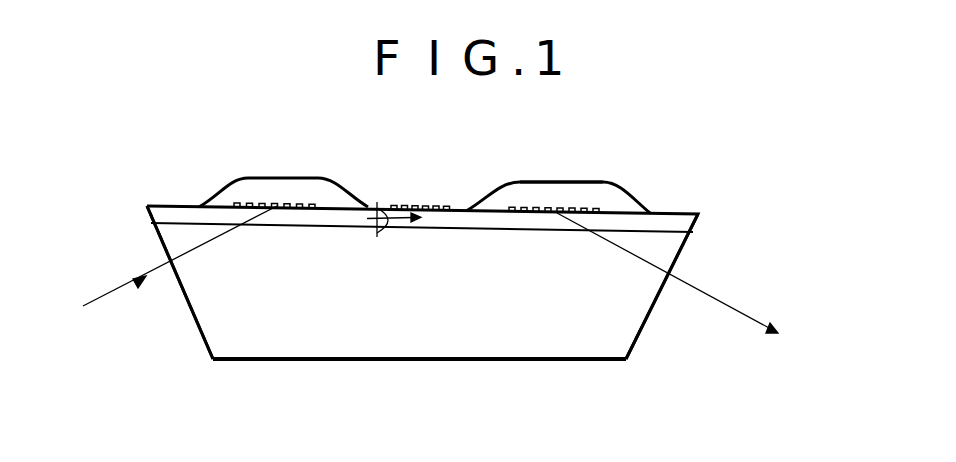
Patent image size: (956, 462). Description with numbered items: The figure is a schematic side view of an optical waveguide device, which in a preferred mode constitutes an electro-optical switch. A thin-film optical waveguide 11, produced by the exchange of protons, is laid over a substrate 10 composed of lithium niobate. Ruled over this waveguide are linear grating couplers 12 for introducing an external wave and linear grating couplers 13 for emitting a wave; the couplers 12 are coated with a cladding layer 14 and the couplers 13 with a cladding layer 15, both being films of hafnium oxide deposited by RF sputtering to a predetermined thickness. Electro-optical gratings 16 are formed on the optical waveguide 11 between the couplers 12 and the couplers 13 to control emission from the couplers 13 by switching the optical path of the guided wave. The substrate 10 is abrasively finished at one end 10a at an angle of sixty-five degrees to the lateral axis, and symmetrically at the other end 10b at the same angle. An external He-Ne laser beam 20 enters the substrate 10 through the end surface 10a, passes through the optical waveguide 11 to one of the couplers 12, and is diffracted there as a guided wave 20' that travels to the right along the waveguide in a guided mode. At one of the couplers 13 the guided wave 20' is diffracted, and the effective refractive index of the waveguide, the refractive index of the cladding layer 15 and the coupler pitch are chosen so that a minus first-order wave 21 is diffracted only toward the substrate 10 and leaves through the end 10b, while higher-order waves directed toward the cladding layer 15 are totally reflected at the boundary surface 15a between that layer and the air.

The substrate 10 is at (437, 326).
The end surface 10a is at (198, 327).
The other end 10b is at (645, 323).
The thin-film optical waveguide 11 is at (340, 217).
The linear grating couplers for introducing an external wave 12 is at (276, 207).
The linear grating couplers for emitting a wave 13 is at (560, 211).
The cladding layer 14 is at (243, 172).
The cladding layer 15 is at (640, 188).
The boundary surface 15a is at (518, 182).
The electro-optical gratings 16 is at (433, 204).
The He-Ne laser beam 20 is at (180, 256).
The guided wave 20' is at (394, 249).
The minus first-order wave 21 is at (702, 292).